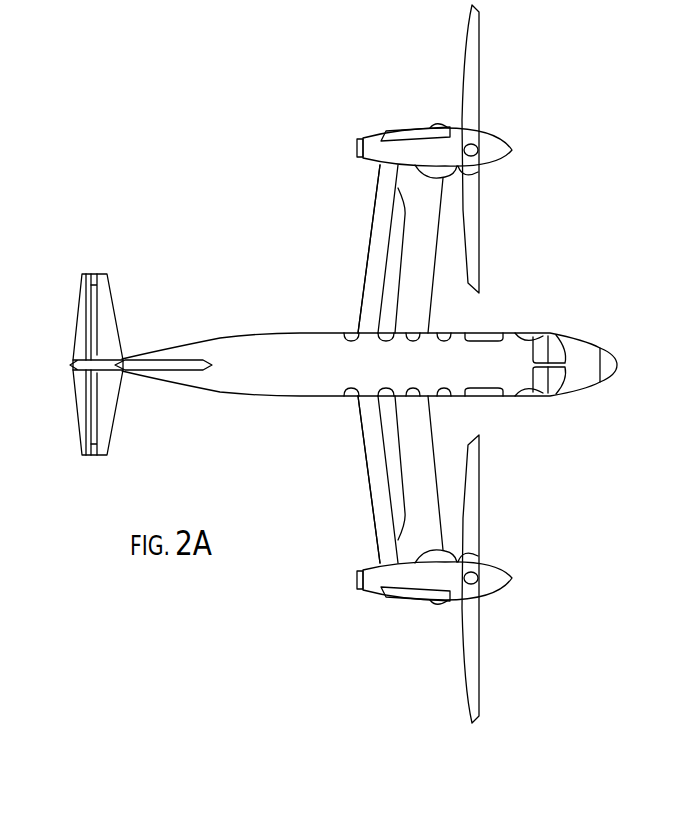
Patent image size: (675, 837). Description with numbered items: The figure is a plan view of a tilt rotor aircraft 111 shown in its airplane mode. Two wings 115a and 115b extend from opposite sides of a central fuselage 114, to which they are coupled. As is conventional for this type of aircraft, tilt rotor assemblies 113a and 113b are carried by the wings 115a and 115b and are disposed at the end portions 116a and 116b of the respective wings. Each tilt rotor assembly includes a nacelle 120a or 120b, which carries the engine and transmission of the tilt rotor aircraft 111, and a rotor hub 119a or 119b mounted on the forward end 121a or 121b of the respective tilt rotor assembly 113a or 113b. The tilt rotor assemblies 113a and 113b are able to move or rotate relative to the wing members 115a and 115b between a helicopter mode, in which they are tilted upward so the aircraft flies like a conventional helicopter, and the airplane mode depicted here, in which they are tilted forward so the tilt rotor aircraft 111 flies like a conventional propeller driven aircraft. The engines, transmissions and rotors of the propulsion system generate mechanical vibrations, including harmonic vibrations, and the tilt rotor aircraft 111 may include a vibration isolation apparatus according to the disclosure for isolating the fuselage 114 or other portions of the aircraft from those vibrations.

The tilt rotor aircraft 111 is at (343, 364).
The fuselage 114 is at (272, 396).
The tilt rotor assembly 113a is at (413, 149).
The tilt rotor assembly 113b is at (414, 579).
The wing 115a is at (370, 238).
The wing 115b is at (370, 491).
The end portion of wing 116a is at (374, 169).
The end portion of wing 116b is at (374, 558).
The rotor hub 119a is at (503, 142).
The rotor hub 119b is at (505, 590).
The nacelle 120a is at (373, 134).
The nacelle 120b is at (373, 594).
The forward end of tilt rotor assembly 121a is at (467, 170).
The forward end of tilt rotor assembly 121b is at (462, 557).